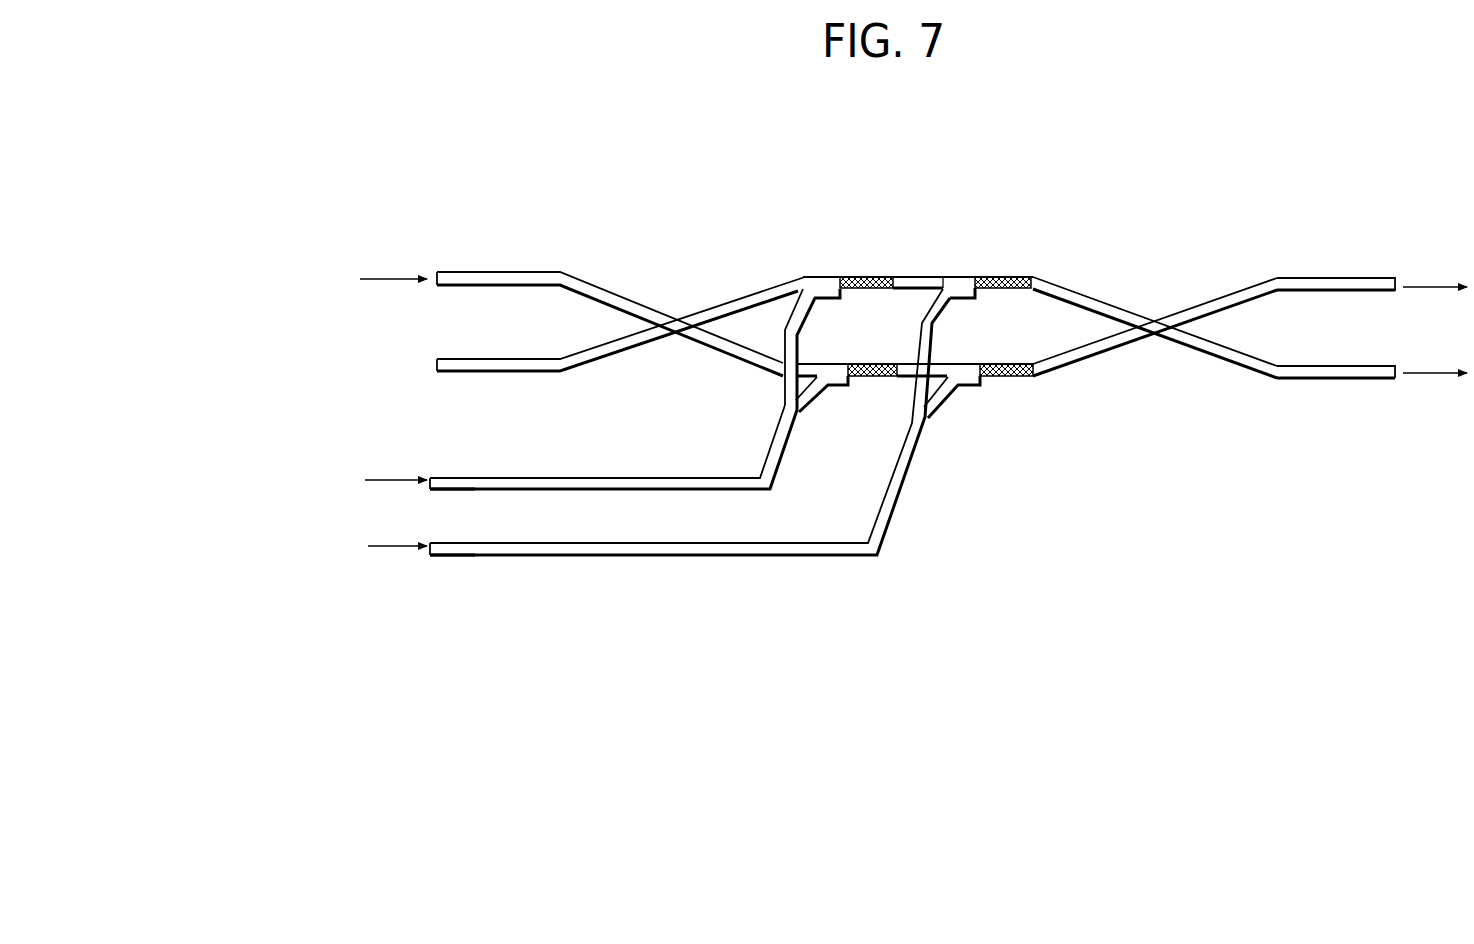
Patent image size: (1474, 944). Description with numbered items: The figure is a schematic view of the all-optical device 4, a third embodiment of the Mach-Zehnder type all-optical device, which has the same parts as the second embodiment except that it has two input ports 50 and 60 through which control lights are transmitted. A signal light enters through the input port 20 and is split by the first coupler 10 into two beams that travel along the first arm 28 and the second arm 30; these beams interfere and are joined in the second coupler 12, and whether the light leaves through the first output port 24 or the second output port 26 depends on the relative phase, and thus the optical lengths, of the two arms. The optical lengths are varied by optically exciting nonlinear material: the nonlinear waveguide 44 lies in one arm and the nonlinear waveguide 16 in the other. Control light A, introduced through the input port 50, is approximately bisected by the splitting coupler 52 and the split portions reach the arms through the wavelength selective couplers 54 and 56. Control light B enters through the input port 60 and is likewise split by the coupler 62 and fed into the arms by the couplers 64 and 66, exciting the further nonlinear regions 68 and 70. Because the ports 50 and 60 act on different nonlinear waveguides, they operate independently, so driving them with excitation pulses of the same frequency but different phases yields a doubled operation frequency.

The all-optical device 4 is at (847, 167).
The first 3dB coupler 10 is at (680, 308).
The second 3dB coupler 12 is at (1158, 318).
The nonlinear waveguide 16 is at (878, 377).
The input port 20 is at (437, 272).
The first output port 24 is at (1397, 292).
The second output port 26 is at (1397, 379).
The first arm 28 is at (962, 276).
The second arm 30 is at (953, 362).
The nonlinear waveguide 44 is at (880, 276).
The input port 50 is at (430, 478).
The 3 dB coupler 52 is at (795, 428).
The second wavelength selective coupler 54 is at (815, 276).
The first wavelength selective coupler 56 is at (840, 385).
The input port 60 is at (433, 558).
The control light B waveguide 62 is at (925, 428).
The junction of control B branch with upper arm 64 is at (963, 296).
The branch waveguide to lower arm from control B 66 is at (967, 385).
The second nonlinear optical region of upper waveguide 68 is at (1010, 276).
The second nonlinear optical region of lower waveguide 70 is at (1015, 376).